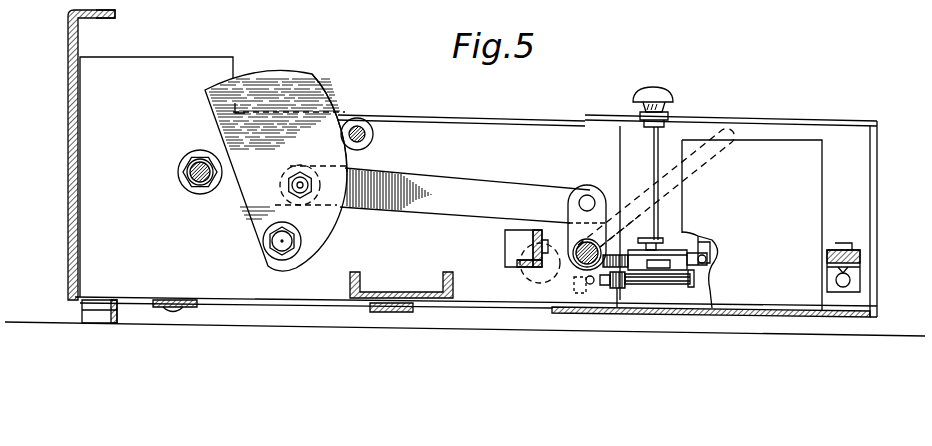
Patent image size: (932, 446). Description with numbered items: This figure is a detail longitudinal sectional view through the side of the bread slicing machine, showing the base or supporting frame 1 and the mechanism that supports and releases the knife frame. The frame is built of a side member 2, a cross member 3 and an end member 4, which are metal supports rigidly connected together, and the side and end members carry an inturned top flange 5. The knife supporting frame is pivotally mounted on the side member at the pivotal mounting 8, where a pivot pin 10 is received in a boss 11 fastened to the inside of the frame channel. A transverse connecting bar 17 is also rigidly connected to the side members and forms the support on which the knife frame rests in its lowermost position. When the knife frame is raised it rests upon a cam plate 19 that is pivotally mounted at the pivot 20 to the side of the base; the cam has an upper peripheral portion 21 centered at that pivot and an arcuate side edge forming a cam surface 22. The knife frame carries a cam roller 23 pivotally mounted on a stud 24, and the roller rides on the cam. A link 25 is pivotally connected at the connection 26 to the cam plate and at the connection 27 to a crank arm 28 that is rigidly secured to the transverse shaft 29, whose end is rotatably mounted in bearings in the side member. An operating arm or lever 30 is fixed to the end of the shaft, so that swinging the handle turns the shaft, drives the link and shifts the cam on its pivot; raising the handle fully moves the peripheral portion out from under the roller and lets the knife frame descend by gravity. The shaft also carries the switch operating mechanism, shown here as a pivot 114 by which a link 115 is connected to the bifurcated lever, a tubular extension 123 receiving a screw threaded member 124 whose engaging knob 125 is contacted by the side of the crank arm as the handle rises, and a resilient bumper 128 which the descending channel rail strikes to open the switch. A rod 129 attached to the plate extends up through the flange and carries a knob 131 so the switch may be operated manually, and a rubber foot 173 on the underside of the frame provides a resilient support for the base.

The base or supporting frame 1 is at (540, 118).
The side members 2 is at (496, 118).
The cross member 3 is at (448, 279).
The end member 4 is at (70, 73).
The inturned top flanges 5 is at (116, 17).
The pivotal mounting 8 is at (207, 168).
The pivot pins 10 is at (204, 190).
The bosses 11 is at (189, 186).
The transverse connecting bar 17 is at (862, 255).
The cam plates 19 is at (276, 156).
The pivot 20 is at (270, 242).
The upper peripheral portion 21 is at (258, 72).
The cam surface 22 is at (330, 104).
The cam rollers 23 is at (387, 120).
The studs 24 is at (362, 130).
The links 25 is at (478, 181).
The pivotal connection 26 is at (290, 174).
The pivotal connection 27 is at (566, 252).
The crank arms 28 is at (606, 212).
The transverse shaft 29 is at (577, 267).
The operating arm or lever 30 is at (726, 126).
The pivot 114 is at (713, 271).
The link 115 is at (706, 246).
The tubular extension 123 is at (655, 283).
The screw threaded member 124 is at (617, 293).
The engaging knob or operating end 125 is at (606, 288).
The resilient bumper 128 is at (673, 268).
The rod 129 is at (652, 143).
The knob 131 is at (665, 96).
The rubber feet 173 is at (115, 318).